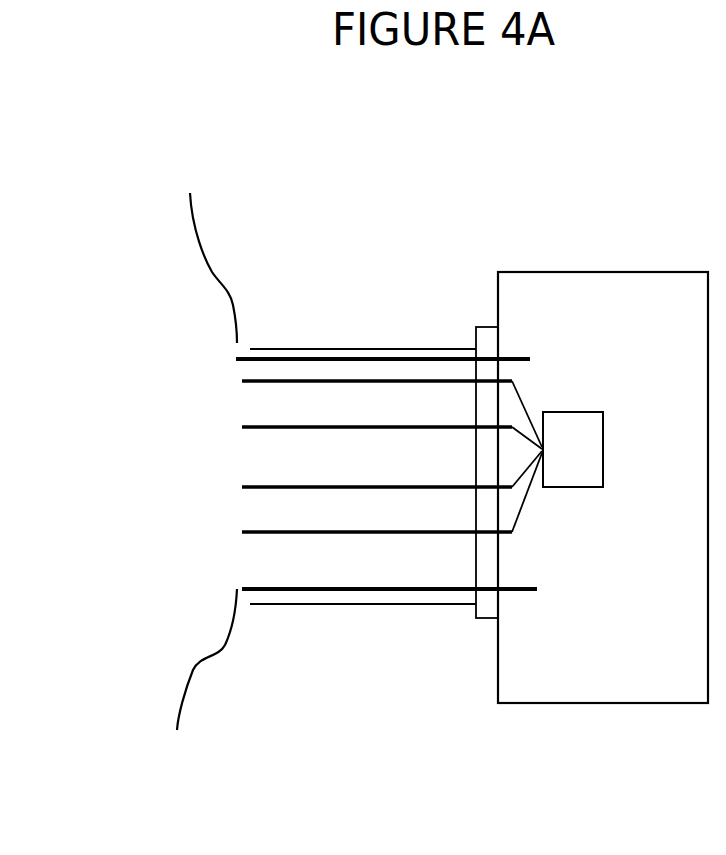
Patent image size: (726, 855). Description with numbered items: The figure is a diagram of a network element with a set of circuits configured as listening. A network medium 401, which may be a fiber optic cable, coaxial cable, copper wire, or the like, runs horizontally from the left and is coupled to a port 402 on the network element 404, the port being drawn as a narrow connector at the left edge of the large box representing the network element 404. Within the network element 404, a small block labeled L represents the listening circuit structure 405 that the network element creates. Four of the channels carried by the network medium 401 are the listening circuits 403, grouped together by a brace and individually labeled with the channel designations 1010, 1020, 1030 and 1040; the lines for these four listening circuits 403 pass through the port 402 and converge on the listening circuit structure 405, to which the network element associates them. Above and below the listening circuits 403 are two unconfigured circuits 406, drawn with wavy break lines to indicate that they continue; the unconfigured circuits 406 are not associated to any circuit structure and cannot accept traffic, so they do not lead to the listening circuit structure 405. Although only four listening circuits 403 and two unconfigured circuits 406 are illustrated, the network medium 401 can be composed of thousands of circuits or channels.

The network medium 401 is at (370, 348).
The port 402 is at (488, 620).
The listening circuits 403 is at (287, 476).
The network element 404 is at (603, 705).
The listening circuit structure 405 is at (577, 417).
The unconfigured circuits 406 is at (196, 456).
The data line 10 10 1010 is at (377, 414).
The data line 10 20 1020 is at (377, 445).
The data line 10 30 1030 is at (377, 487).
The data line 10 40 1040 is at (377, 512).